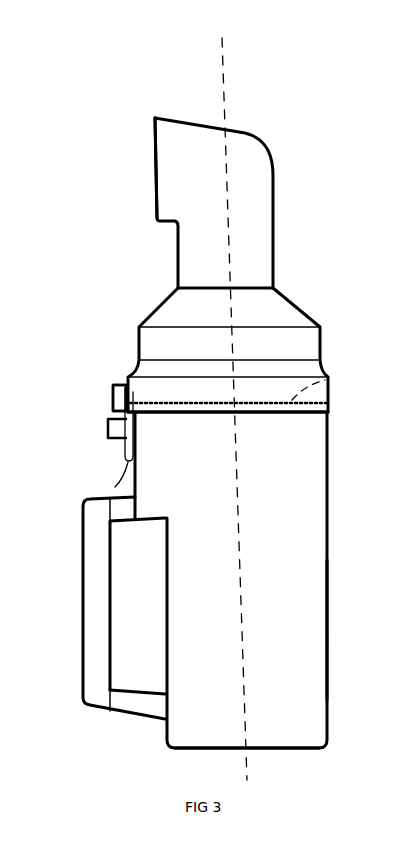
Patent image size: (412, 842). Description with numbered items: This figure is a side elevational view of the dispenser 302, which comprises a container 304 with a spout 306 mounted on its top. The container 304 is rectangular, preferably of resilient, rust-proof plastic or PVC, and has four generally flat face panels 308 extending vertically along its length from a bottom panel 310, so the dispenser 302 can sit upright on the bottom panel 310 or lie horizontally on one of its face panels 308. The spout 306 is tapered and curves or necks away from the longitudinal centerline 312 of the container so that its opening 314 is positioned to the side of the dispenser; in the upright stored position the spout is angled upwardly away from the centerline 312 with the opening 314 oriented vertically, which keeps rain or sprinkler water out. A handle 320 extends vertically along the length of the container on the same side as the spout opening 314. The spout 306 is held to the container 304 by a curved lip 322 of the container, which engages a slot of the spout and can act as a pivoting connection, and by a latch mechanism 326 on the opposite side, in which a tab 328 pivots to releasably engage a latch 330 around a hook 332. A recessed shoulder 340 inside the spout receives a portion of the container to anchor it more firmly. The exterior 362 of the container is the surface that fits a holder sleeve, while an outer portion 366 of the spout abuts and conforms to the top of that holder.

The dispenser 302 is at (214, 100).
The container 304 is at (331, 517).
The spout 306 is at (275, 203).
The face panels 308 is at (329, 595).
The bottom panel 310 is at (290, 750).
The longitudinal centerline 312 is at (232, 406).
The opening 314 is at (155, 167).
The handle 320 is at (82, 582).
The lip 322 is at (333, 407).
The latch mechanism 326 is at (94, 422).
The tab 328 is at (114, 476).
The latch 330 is at (122, 383).
The hook 332 is at (112, 394).
The recessed shoulder 340 is at (335, 375).
The exterior 362 is at (329, 647).
The outer portion 366 is at (283, 413).